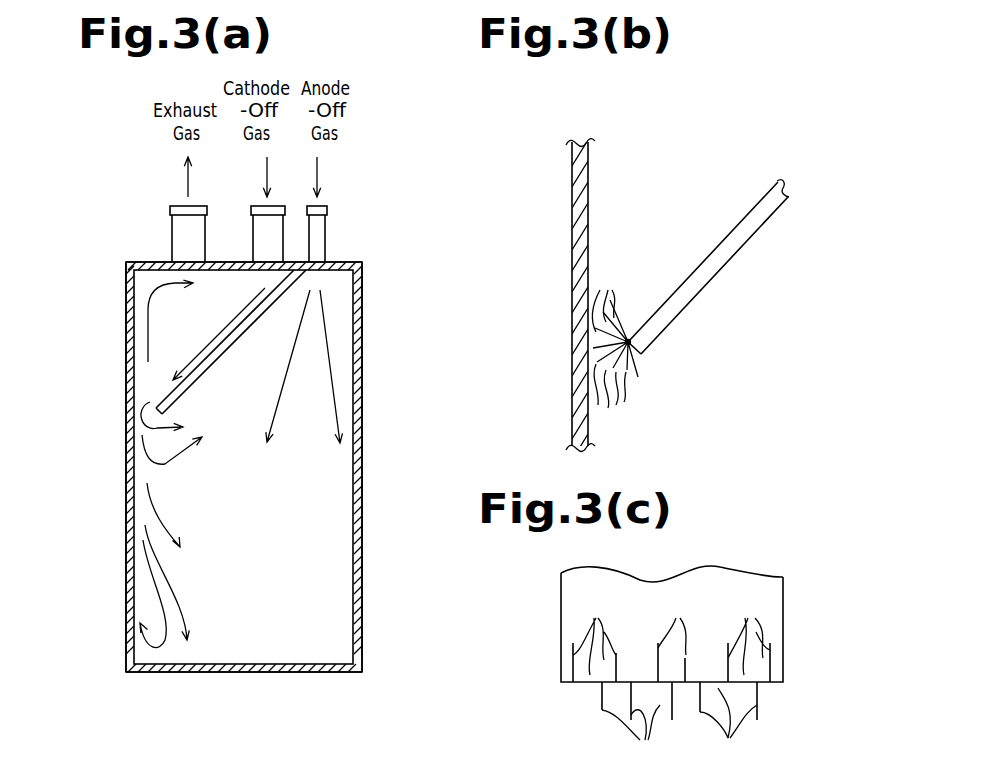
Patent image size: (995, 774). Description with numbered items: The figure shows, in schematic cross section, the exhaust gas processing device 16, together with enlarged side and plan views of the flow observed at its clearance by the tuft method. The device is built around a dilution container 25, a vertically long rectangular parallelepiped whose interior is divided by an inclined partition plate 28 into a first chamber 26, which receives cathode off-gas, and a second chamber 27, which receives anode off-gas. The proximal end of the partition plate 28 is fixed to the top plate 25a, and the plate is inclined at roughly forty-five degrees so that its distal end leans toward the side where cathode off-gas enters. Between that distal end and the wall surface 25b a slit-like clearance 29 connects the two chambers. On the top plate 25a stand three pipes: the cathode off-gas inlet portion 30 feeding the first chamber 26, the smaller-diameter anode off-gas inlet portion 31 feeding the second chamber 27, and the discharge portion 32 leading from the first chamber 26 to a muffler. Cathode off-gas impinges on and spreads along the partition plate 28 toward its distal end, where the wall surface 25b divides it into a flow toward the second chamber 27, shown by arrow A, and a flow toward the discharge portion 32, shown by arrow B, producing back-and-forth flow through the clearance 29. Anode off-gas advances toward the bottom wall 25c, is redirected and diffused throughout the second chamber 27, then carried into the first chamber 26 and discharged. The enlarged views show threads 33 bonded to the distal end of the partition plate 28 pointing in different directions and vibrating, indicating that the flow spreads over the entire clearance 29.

In FIG. 3A, the exhaust gas processing device 16 is at (437, 241).
In FIG. 3A, the dilution container 25 is at (368, 385).
In FIG. 3A, the top plate 25a is at (151, 262).
In FIG. 3A, the wall surface 25b is at (127, 543).
In FIG. 3B, the wall surface 25b is at (572, 283).
In FIG. 3A, the bottom wall 25c is at (248, 664).
In FIG. 3A, the first chamber 26 is at (227, 270).
In FIG. 3A, the second chamber 27 is at (342, 495).
In FIG. 3A, the partition plate 28 is at (233, 346).
In FIG. 3B, the partition plate 28 is at (710, 283).
In FIG. 3C, the partition plate 28 is at (745, 587).
In FIG. 3A, the clearance 29 is at (142, 421).
In FIG. 3A, the cathode off-gas inlet portion 30 is at (253, 209).
In FIG. 3A, the anode off-gas inlet portion 31 is at (327, 209).
In FIG. 3A, the discharge portion 32 is at (170, 210).
In FIG. 3B, the threads 33 is at (615, 345).
In FIG. 3C, the threads 33 is at (671, 680).
In FIG. 3A, the arrow A is at (145, 401).
In FIG. 3A, the arrow B is at (148, 347).